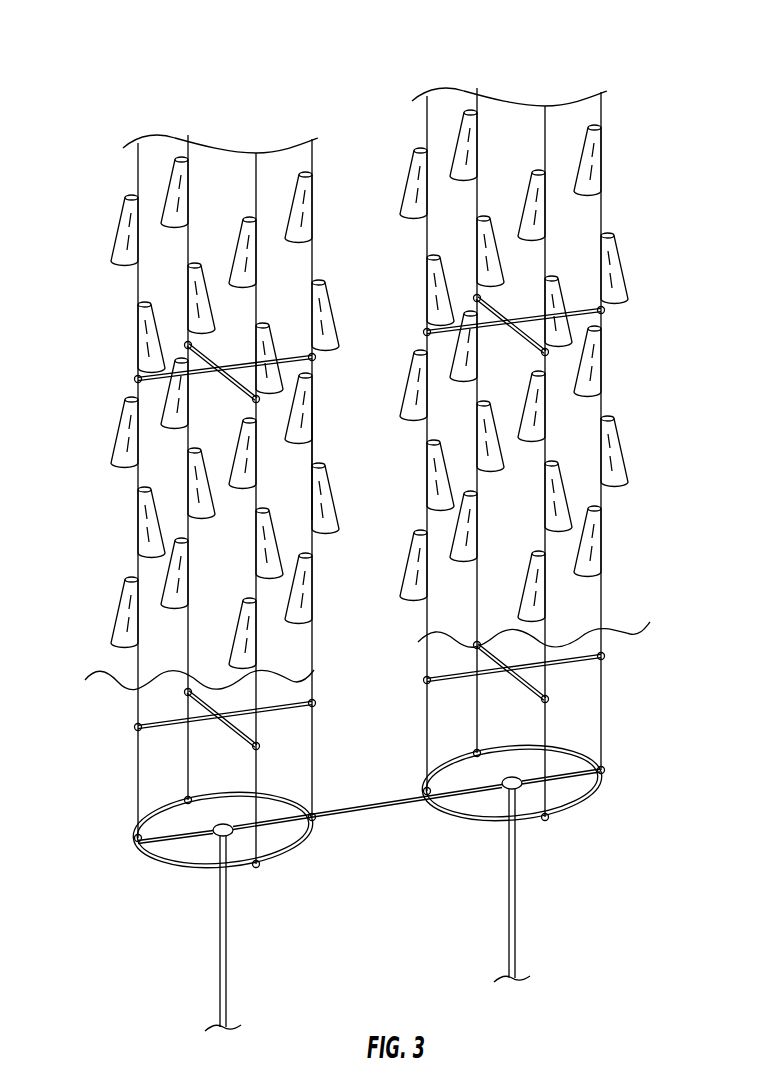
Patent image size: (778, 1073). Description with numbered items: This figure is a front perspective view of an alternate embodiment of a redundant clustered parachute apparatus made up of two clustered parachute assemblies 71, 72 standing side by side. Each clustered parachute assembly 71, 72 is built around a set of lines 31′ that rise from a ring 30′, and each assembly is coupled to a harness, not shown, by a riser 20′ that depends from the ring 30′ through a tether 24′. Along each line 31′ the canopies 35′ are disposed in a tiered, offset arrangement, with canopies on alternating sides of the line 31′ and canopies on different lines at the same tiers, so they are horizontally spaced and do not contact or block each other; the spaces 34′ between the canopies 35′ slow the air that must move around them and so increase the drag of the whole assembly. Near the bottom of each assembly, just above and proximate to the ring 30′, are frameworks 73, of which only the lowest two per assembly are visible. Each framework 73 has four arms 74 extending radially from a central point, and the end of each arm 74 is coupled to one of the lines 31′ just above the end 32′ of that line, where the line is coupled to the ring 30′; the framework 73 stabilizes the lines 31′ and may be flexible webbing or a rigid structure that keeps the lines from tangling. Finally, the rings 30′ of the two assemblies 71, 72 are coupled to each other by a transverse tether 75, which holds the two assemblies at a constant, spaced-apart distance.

The clustered parachute assembly 71 is at (183, 128).
The clustered parachute assembly 72 is at (562, 74).
The canopy 35′ is at (108, 228).
The space 34′ is at (308, 462).
The framework 73 is at (238, 384).
The arm 74 is at (138, 732).
The line 31′ is at (366, 649).
The end of the line 32′ is at (133, 842).
The ring 30′ is at (242, 866).
The tether 24′ is at (282, 836).
The transverse tether 75 is at (385, 806).
The riser 20′ is at (228, 990).